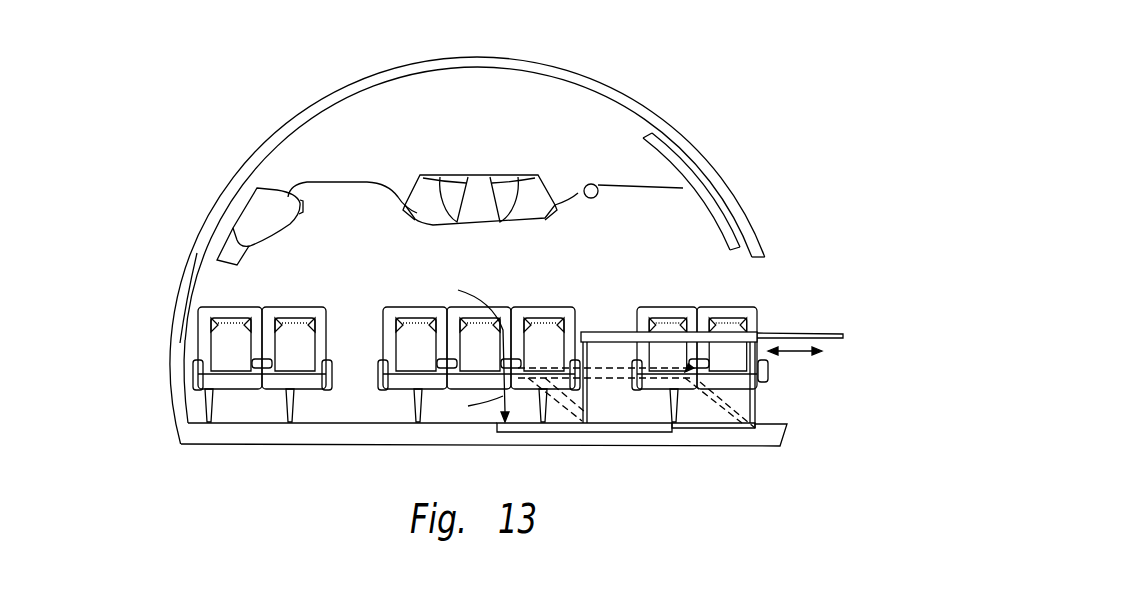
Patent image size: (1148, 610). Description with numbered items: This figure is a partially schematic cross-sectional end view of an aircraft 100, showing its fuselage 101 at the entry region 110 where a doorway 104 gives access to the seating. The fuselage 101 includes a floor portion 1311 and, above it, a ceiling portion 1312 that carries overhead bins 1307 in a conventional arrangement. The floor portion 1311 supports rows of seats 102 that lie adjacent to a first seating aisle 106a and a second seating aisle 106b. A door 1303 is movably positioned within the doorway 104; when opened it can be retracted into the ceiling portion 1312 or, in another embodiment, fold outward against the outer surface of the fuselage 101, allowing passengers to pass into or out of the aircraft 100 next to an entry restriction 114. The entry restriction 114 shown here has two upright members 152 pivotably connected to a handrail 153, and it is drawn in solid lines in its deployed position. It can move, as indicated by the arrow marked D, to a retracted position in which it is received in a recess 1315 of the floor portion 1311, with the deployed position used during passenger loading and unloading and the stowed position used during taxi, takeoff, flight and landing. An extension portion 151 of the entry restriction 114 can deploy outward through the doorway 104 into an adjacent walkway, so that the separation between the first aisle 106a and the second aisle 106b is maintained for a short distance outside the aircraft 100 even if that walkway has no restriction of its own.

The aircraft 100 is at (504, 276).
The fuselage 101 is at (700, 150).
The seats 102 is at (303, 306).
The doorway 104 is at (769, 262).
The first seating aisle 106a is at (616, 404).
The second seating aisle 106b is at (356, 410).
The entry region 110 is at (758, 315).
The entry restriction 114 is at (668, 374).
The extension portion 151 is at (845, 339).
The upright members 152 is at (820, 383).
The handrail 153 is at (628, 332).
The door 1303 is at (657, 147).
The overhead bins 1307 is at (285, 232).
The floor portion 1311 is at (786, 425).
The ceiling portion 1312 is at (585, 184).
The recess 1315 is at (522, 433).